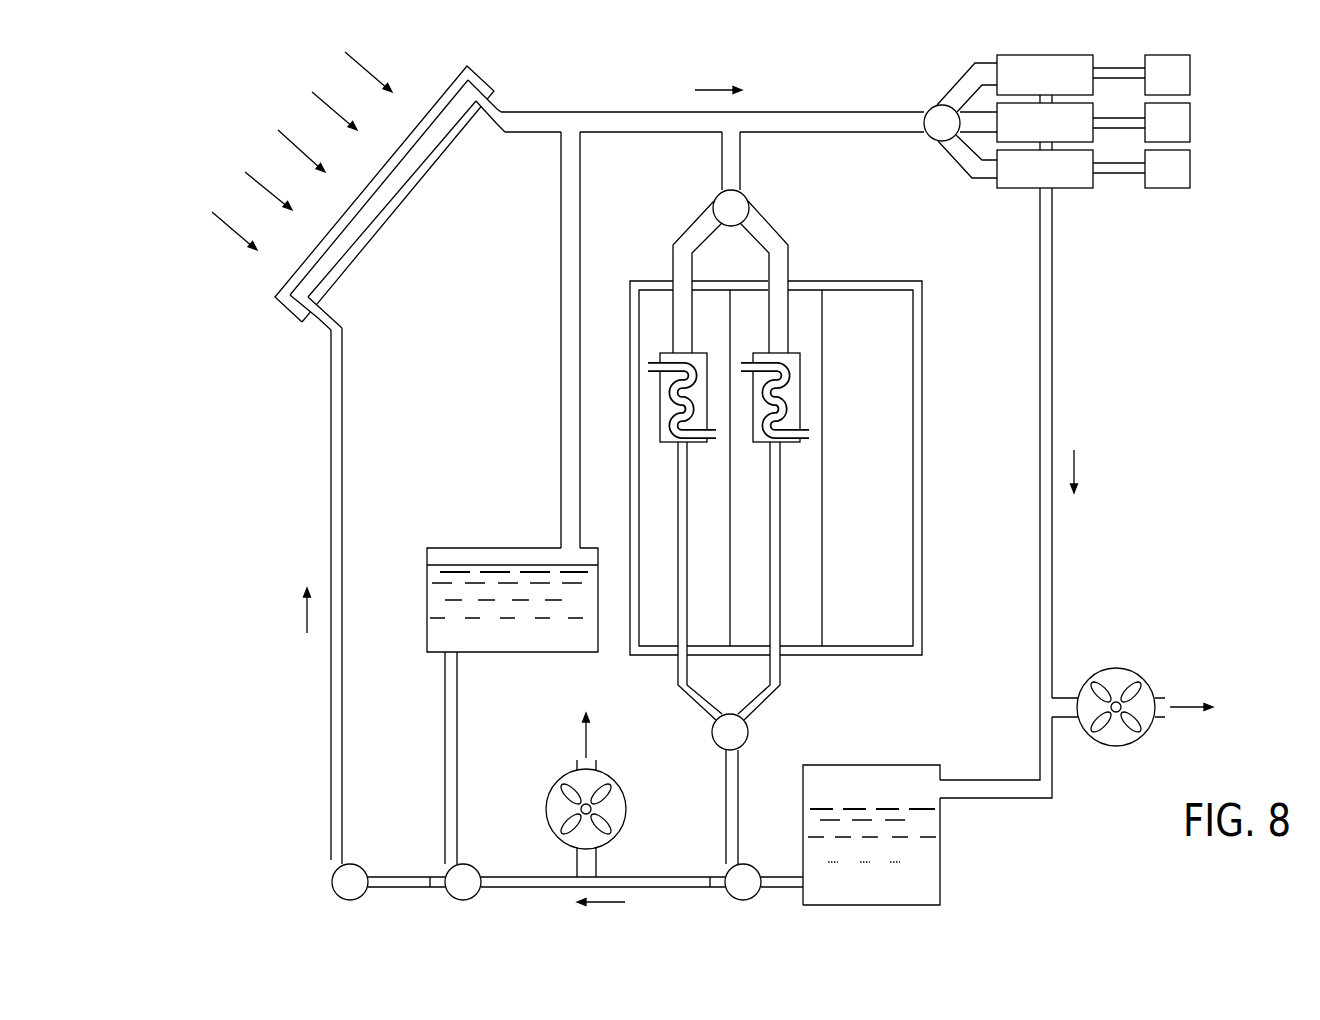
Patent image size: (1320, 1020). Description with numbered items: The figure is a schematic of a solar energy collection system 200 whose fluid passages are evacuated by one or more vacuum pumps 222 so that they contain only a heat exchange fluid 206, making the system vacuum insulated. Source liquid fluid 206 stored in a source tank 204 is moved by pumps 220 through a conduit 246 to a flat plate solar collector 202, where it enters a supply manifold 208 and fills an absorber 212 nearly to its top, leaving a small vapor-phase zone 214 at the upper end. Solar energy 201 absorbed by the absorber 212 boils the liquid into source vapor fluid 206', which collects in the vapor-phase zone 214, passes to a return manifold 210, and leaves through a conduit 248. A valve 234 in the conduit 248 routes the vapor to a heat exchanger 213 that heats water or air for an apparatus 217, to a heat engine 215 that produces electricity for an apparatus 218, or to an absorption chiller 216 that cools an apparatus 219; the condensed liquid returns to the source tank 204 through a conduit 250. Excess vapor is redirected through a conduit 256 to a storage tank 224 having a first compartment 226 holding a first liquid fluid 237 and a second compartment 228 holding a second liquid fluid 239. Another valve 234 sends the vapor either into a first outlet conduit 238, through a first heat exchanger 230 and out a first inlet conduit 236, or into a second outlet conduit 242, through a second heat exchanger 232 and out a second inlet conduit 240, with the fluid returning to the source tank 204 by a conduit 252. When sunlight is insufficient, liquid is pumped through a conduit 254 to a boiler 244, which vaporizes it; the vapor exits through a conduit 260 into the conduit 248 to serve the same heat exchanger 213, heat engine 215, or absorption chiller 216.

The solar energy collection system 200 is at (1113, 836).
The solar energy 201 is at (278, 108).
The flat plate solar collector 202 is at (368, 247).
The source tank 204 is at (940, 817).
The heat exchange fluid 206 is at (697, 715).
The source vapor fluid 206' is at (475, 328).
The supply manifold 208 is at (316, 320).
The return manifold 210 is at (496, 108).
The absorber 212 is at (380, 205).
The heat exchanger 213 is at (976, 63).
The vapor-phase zone 214 is at (471, 95).
The heat engine 215 is at (1094, 136).
The absorption chiller 216 is at (1016, 192).
The apparatus 217 is at (1192, 74).
The apparatus 218 is at (1192, 121).
The apparatus 219 is at (1192, 168).
The pump 220 is at (365, 866).
The vacuum pump 222 is at (1133, 675).
The storage tank 224 is at (922, 323).
The first compartment 226 is at (812, 340).
The second compartment 228 is at (893, 425).
The first heat exchanger 230 is at (795, 388).
The second heat exchanger 232 is at (667, 408).
The valve 234 is at (748, 199).
The first inlet conduit 236 is at (780, 672).
The first liquid fluid 237 is at (812, 590).
The first outlet conduit 238 is at (780, 266).
The second liquid fluid 239 is at (900, 623).
The second inlet conduit 240 is at (681, 667).
The second outlet conduit 242 is at (681, 262).
The boiler 244 is at (435, 635).
The conduit 246 is at (339, 437).
The conduit 248 is at (651, 121).
The conduit 250 is at (1044, 272).
The conduit 252 is at (723, 818).
The conduit 254 is at (452, 720).
The conduit 256 is at (724, 161).
The conduit 260 is at (570, 353).